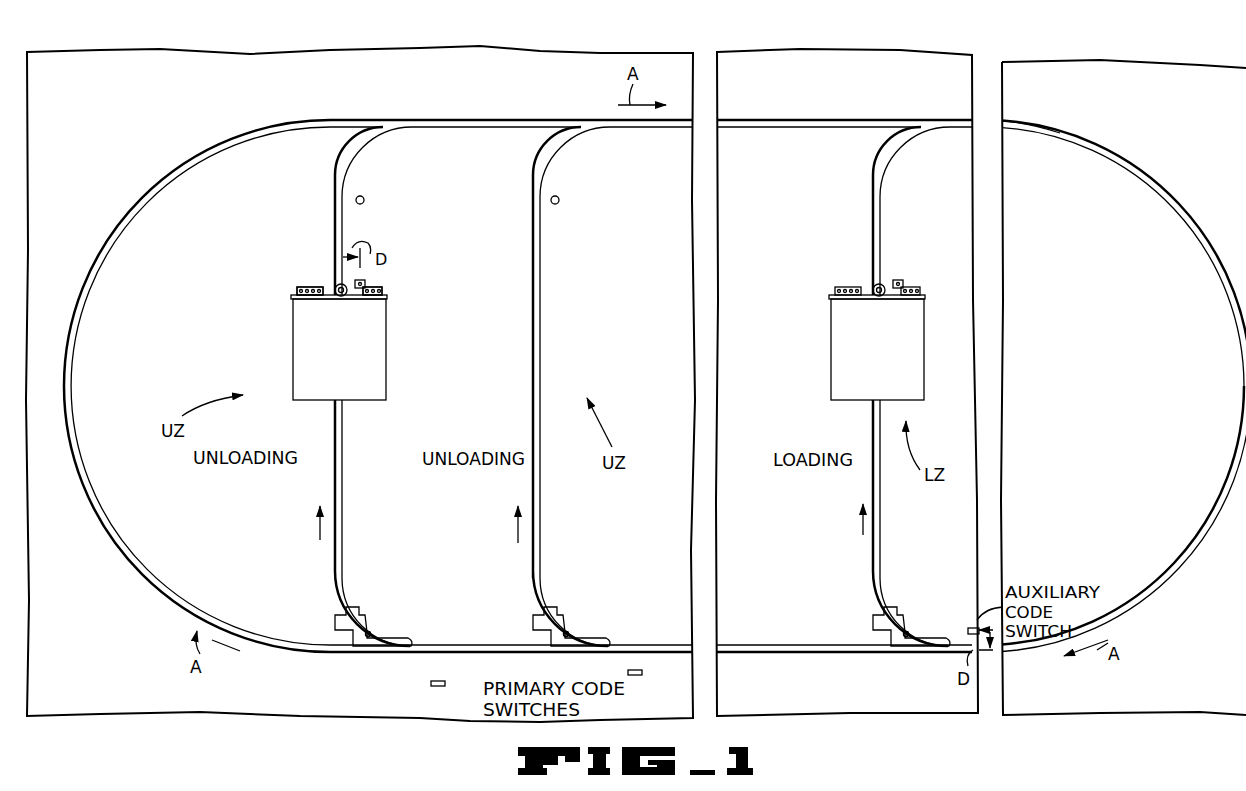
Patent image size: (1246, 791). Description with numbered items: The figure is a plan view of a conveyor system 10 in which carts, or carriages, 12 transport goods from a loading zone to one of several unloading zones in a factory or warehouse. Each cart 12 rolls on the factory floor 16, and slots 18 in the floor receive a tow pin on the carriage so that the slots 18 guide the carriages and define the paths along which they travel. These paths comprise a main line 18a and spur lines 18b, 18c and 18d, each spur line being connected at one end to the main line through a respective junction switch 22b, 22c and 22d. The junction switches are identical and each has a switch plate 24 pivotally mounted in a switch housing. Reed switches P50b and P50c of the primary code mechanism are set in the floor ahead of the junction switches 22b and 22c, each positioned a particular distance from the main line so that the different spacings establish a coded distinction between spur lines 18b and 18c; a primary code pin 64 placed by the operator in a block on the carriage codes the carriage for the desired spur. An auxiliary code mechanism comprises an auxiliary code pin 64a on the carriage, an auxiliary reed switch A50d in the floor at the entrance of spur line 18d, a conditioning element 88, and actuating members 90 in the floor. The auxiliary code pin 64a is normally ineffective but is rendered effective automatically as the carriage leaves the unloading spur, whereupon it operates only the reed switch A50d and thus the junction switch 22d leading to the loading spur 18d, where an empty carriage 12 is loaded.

The conveyor system 10 is at (1095, 117).
The cart 12 is at (352, 360).
The factory floor 16 is at (796, 88).
The slots 18 is at (1120, 156).
The main line 18a is at (650, 122).
The spur line 18b is at (345, 501).
The spur line 18c is at (542, 505).
The spur line 18d is at (883, 507).
The junction switch 22b is at (339, 604).
The junction switch 22c is at (536, 606).
The junction switch 22d is at (878, 609).
The switch plate 24 is at (374, 645).
The primary code pin 64 is at (311, 286).
The auxiliary code element 64a is at (372, 300).
The conditioning element 88 is at (366, 286).
The actuating members 90 is at (361, 194).
The reed switch P50b is at (481, 688).
The reed switch P50c is at (668, 693).
The auxiliary reed switch A50d is at (970, 627).